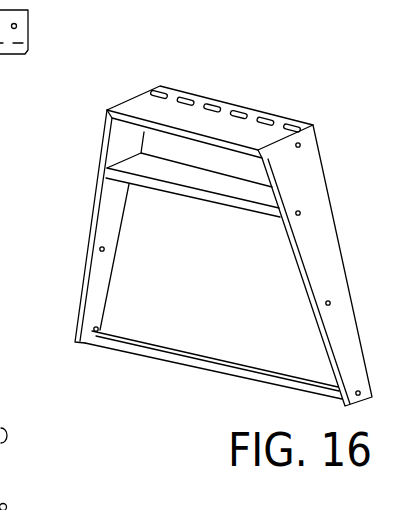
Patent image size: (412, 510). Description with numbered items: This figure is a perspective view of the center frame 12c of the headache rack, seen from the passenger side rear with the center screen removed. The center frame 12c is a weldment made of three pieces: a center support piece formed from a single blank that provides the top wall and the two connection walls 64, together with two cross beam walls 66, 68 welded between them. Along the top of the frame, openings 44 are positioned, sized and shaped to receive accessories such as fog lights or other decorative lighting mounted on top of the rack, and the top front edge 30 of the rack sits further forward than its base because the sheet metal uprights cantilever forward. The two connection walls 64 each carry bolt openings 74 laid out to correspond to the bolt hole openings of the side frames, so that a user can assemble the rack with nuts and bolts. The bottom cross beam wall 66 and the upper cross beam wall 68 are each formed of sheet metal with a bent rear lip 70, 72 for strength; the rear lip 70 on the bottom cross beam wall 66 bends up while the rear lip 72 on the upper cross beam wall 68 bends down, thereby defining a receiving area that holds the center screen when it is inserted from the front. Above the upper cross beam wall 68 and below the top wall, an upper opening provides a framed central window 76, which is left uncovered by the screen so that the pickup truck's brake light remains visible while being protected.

The center frame 12c is at (258, 47).
The top front edge 30 is at (188, 86).
The openings 44 is at (262, 118).
The framed central window 76 is at (172, 146).
The upper cross beam wall 68 is at (206, 187).
The rear lip 72 is at (178, 191).
The connection walls 64 is at (90, 240).
The bolt openings 74 is at (334, 303).
The bottom cross beam wall 66 is at (175, 335).
The rear lip 70 is at (125, 350).